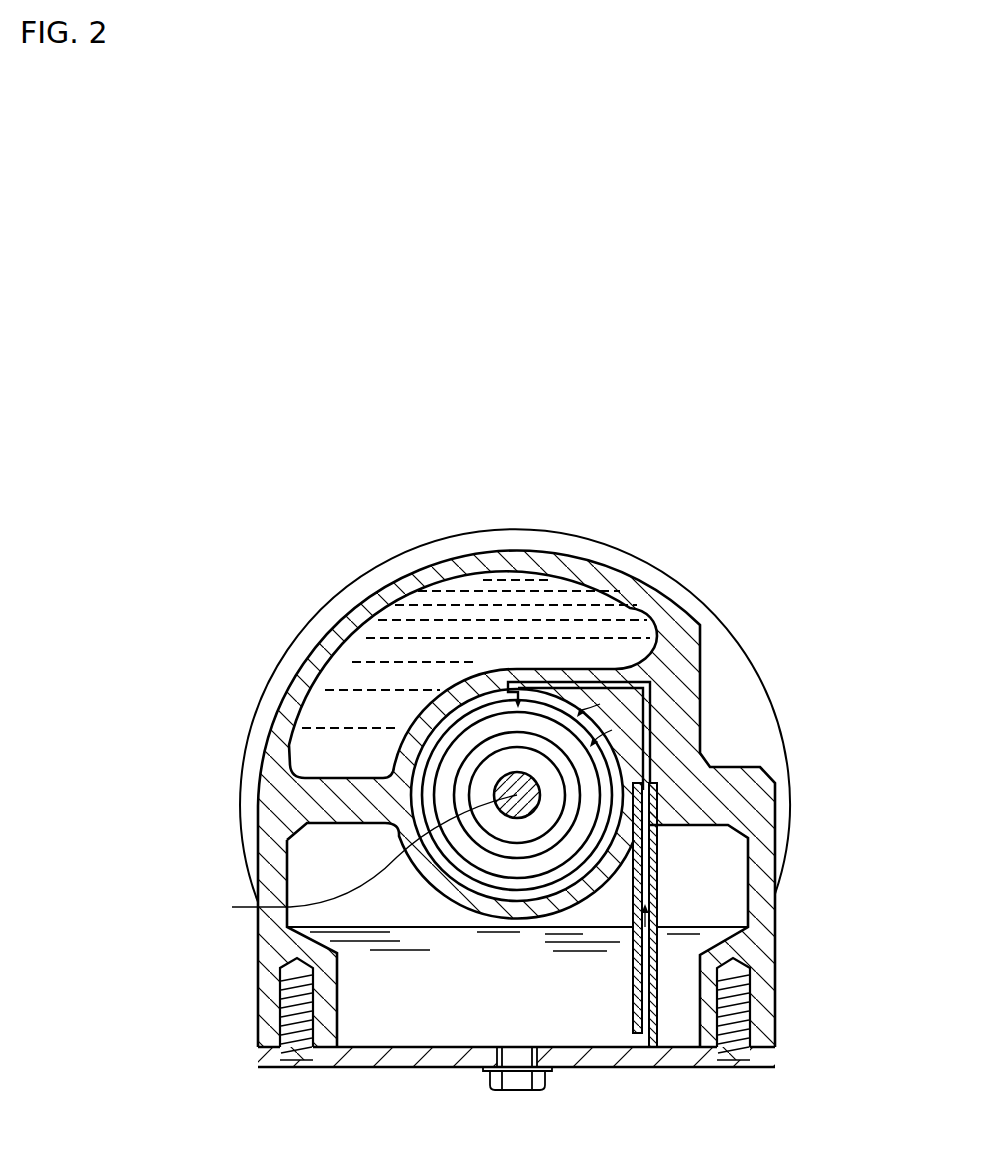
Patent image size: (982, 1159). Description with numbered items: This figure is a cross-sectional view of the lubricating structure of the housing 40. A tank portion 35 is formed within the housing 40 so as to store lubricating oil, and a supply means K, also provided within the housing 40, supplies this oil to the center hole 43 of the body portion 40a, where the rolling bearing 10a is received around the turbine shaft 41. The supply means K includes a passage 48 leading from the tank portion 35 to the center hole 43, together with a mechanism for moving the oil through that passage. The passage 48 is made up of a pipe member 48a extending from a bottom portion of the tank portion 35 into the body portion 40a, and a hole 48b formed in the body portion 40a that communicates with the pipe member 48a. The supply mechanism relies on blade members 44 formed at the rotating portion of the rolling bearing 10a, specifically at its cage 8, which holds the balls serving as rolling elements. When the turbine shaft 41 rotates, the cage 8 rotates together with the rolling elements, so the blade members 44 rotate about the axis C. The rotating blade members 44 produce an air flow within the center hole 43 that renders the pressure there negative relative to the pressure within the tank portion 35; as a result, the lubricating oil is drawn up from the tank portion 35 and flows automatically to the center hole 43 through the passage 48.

The cage 8 is at (462, 752).
The rolling bearing 10a is at (612, 730).
The tank portion 35 is at (413, 1022).
The housing 40 is at (694, 578).
The body portion 40a is at (545, 547).
The turbine shaft 41 is at (505, 783).
The center hole 43 is at (600, 704).
The blade members 44 is at (583, 810).
The passage 48 is at (666, 857).
The pipe member 48a is at (645, 912).
The hole 48b is at (652, 687).
The axis C is at (364, 858).
The supply means K is at (707, 829).